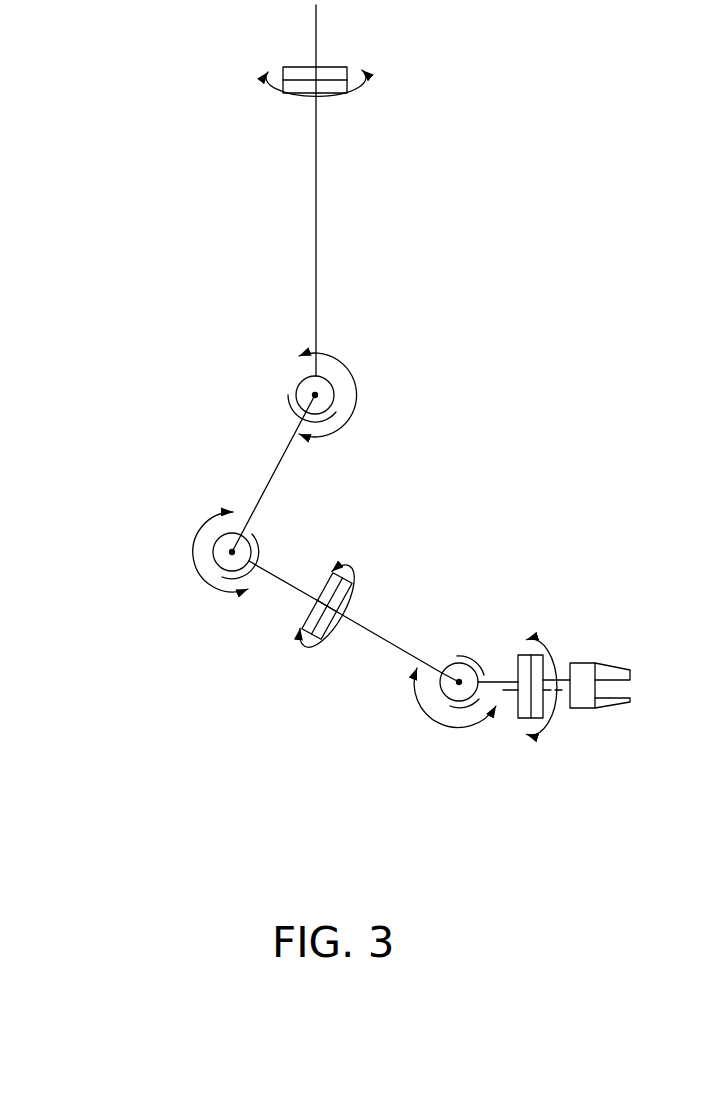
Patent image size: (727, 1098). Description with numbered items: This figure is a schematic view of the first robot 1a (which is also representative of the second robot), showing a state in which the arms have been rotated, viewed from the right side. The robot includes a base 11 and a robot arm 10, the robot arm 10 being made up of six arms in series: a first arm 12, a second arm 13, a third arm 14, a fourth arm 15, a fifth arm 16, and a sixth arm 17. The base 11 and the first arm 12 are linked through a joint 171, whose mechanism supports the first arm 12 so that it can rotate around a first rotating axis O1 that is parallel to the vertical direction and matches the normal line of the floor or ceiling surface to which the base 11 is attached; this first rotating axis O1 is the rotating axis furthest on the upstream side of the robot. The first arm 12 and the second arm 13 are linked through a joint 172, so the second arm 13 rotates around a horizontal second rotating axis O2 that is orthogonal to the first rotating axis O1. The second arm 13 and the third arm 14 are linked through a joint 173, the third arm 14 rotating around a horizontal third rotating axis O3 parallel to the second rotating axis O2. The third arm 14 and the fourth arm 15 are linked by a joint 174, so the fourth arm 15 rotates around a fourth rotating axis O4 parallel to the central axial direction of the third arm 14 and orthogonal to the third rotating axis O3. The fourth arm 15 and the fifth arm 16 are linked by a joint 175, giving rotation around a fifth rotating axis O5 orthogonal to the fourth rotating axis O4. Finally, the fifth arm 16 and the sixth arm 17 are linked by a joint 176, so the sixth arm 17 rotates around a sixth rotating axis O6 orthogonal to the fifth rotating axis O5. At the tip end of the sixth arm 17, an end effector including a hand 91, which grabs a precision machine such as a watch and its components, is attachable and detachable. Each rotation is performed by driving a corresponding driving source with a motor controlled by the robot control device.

The first robot 1a is at (167, 617).
The robot arm 10 is at (155, 567).
The base 11 is at (300, 32).
The first arm 12 is at (298, 230).
The second arm 13 is at (299, 476).
The third arm 14 is at (233, 613).
The fourth arm 15 is at (402, 712).
The fifth arm 16 is at (500, 674).
The sixth arm 17 is at (541, 640).
The joint 171 is at (252, 94).
The joint 172 is at (276, 427).
The joint 173 is at (268, 545).
The joint 174 is at (295, 658).
The joint 175 is at (442, 650).
The joint 176 is at (527, 751).
The hand 91 is at (582, 700).
The first rotating axis O1 is at (311, 114).
The second rotating axis O2 is at (313, 396).
The third rotating axis O3 is at (250, 533).
The fourth rotating axis O4 is at (305, 604).
The fifth rotating axis O5 is at (463, 660).
The sixth rotating axis O6 is at (510, 691).